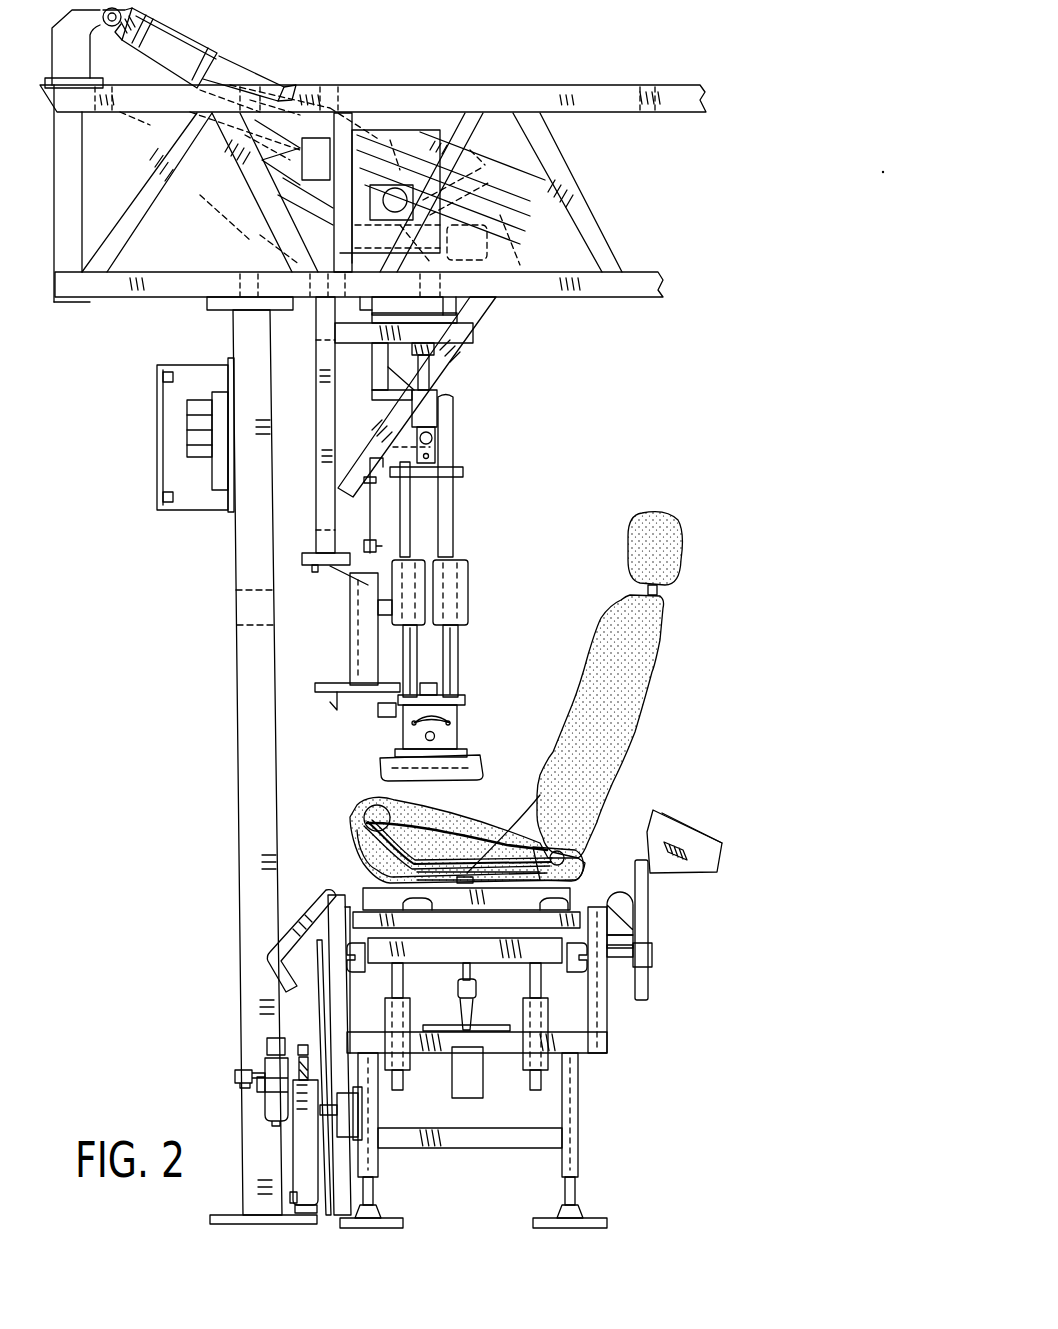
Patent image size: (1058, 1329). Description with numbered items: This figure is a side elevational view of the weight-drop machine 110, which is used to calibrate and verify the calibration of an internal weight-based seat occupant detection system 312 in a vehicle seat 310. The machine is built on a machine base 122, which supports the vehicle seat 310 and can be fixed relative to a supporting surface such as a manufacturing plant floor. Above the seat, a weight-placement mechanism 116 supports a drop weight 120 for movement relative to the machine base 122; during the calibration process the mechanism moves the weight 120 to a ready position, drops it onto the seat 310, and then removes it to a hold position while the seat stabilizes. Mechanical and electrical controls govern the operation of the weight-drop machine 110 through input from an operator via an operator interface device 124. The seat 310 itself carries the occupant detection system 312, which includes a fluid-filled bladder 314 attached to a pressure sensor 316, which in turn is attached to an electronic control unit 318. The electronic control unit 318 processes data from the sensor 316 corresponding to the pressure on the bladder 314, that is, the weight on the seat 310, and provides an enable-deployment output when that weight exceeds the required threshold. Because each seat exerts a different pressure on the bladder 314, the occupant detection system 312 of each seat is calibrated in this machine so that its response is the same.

The weight-drop machine 110 is at (711, 34).
The weight-placement mechanism 116 is at (515, 379).
The drop weight 120 is at (499, 584).
The machine base 122 is at (677, 1070).
The operator interface device 124 is at (693, 831).
The seat 310 is at (523, 697).
The occupant detection system 312 is at (358, 841).
The fluid-filled bladder 314 is at (362, 802).
The pressure sensor 316 is at (487, 848).
The electronic control unit 318 is at (566, 855).